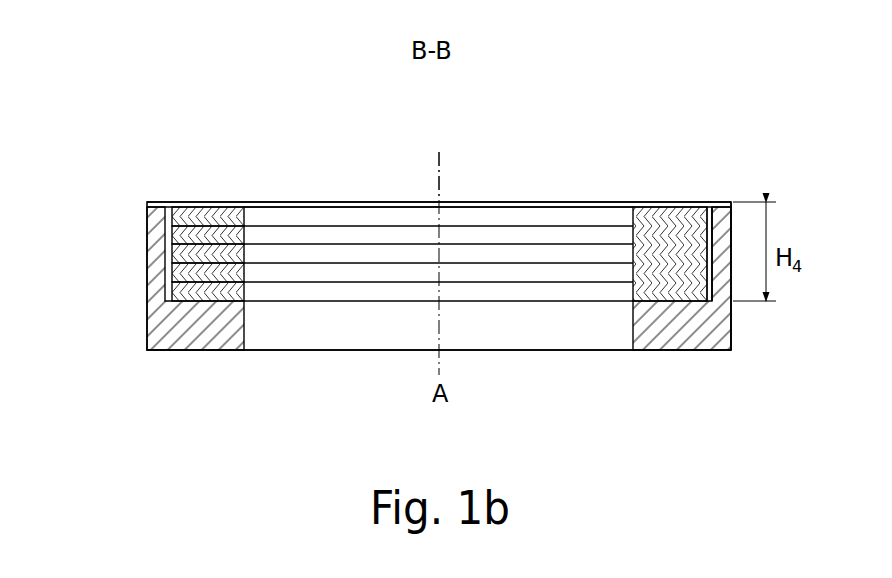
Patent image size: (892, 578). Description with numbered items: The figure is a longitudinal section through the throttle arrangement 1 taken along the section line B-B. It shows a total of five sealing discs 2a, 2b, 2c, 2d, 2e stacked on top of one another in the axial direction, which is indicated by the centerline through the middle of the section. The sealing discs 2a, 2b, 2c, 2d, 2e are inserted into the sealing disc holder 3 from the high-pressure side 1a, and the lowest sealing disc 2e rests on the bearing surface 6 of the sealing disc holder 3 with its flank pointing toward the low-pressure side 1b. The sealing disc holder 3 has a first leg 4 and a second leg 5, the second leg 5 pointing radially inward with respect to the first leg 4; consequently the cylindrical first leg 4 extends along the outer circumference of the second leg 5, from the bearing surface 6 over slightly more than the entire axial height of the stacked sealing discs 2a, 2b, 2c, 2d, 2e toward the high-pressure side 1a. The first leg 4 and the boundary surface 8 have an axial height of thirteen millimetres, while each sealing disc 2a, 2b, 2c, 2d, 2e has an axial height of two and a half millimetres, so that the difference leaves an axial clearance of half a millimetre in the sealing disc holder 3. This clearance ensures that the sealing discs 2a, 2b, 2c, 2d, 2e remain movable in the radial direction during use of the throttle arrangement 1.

The throttle arrangement 1 is at (381, 160).
The high-pressure side 1a is at (456, 146).
The low-pressure side 1b is at (456, 455).
The sealing disc 2a is at (172, 216).
The sealing disc 2b is at (172, 238).
The sealing disc 2c is at (172, 255).
The sealing disc 2d is at (172, 274).
The sealing disc 2e is at (172, 293).
The sealing disc holder 3 is at (537, 200).
The first leg 4 is at (722, 210).
The second leg 5 is at (720, 328).
The bearing surface 6 is at (655, 288).
The boundary surface 8 is at (705, 208).